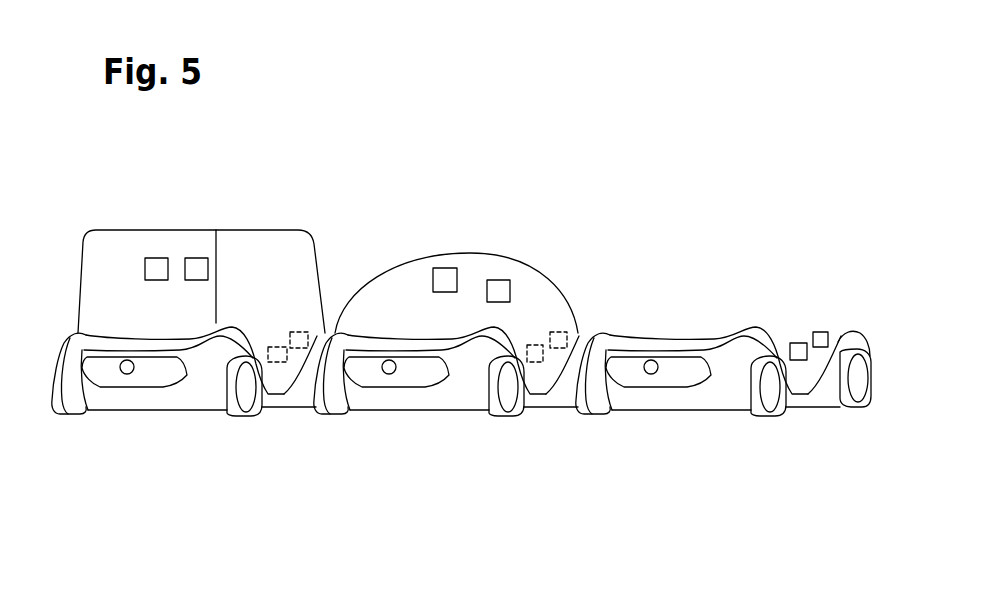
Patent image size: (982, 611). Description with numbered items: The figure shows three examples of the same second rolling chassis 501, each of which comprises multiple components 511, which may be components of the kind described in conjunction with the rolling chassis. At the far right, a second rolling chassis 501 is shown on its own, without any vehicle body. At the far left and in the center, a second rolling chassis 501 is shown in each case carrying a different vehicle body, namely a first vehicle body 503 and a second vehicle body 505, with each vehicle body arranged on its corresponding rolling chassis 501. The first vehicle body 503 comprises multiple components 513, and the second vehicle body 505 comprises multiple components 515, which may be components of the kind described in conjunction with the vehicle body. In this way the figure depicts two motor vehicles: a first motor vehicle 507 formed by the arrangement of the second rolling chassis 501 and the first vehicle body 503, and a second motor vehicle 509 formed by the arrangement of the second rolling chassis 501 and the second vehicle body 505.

The second rolling chassis 501 is at (461, 339).
The first vehicle body 503 is at (545, 265).
The second vehicle body 505 is at (257, 232).
The first motor vehicle 507 is at (446, 357).
The second motor vehicle 509 is at (188, 339).
The components 511 is at (280, 347).
The components 513 is at (497, 280).
The components 515 is at (197, 258).